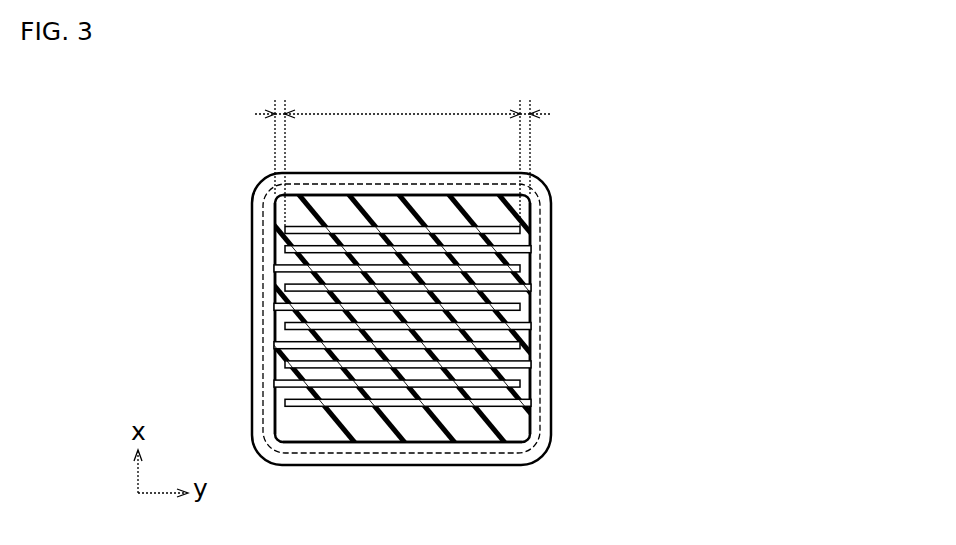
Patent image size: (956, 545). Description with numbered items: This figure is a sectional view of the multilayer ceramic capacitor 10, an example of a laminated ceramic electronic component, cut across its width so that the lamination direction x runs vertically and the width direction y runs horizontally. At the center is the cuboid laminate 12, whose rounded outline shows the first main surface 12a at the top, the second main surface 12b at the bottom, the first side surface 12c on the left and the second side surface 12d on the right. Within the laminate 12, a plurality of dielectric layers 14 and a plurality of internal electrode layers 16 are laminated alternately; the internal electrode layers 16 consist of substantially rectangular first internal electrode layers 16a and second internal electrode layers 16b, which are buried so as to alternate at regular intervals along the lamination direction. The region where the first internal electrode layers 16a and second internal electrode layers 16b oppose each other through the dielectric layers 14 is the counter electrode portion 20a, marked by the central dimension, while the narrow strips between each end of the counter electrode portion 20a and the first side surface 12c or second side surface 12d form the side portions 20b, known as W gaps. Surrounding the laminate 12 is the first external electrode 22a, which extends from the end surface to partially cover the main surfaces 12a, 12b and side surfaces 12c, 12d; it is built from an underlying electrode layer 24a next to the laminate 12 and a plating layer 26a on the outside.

The multilayer ceramic capacitor 10 is at (212, 150).
The laminate 12 is at (453, 317).
The first main surface 12a is at (373, 195).
The second main surface 12b is at (430, 443).
The first side surface 12c is at (276, 322).
The second side surface 12d is at (531, 303).
The dielectric layer 14 is at (372, 380).
The internal electrode layer 16 is at (453, 320).
The first internal electrode layer 16a is at (285, 232).
The second internal electrode layer 16b is at (521, 254).
The counter electrode portion 20a is at (402, 153).
The side portion 20b is at (402, 137).
The first external electrode 22a is at (492, 319).
The underlying electrode layer 24a is at (533, 238).
The plating layer 26a is at (544, 218).